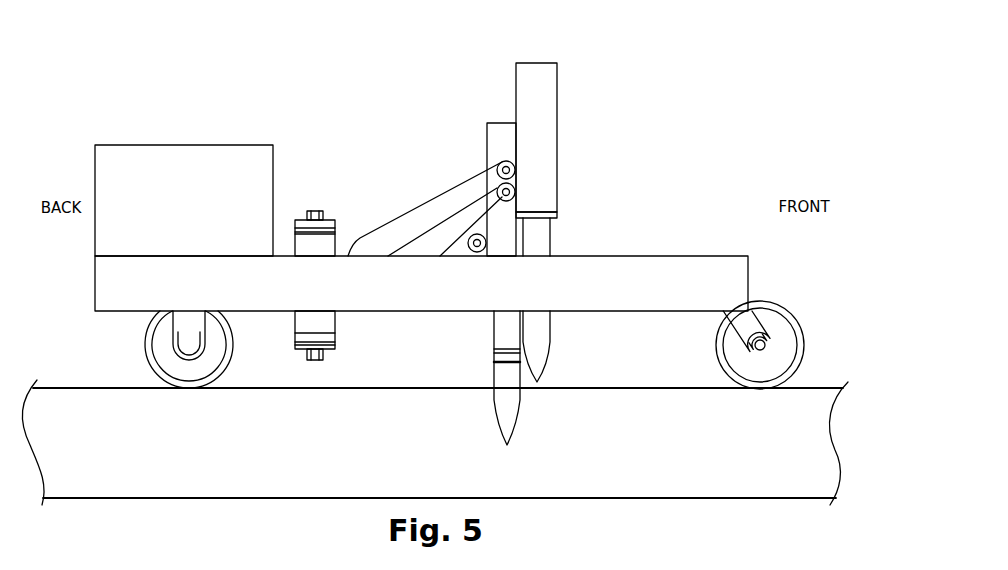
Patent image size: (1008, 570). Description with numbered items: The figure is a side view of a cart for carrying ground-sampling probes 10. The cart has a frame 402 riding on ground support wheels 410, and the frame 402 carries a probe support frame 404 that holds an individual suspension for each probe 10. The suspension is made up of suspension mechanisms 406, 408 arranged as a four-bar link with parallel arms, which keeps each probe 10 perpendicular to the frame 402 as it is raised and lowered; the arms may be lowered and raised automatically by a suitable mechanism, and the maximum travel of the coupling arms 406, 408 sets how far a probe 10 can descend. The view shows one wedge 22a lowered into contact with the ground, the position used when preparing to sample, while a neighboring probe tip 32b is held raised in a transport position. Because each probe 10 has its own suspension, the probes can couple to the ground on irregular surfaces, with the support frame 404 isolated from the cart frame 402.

The probe 10 is at (500, 130).
The wedge 22a is at (505, 400).
The second probe 32b is at (542, 330).
The frame 402 is at (647, 267).
The probe support frame 404 is at (337, 243).
The suspension mechanism 406 is at (460, 252).
The suspension mechanism 408 is at (447, 197).
The ground support wheel 410 is at (803, 333).